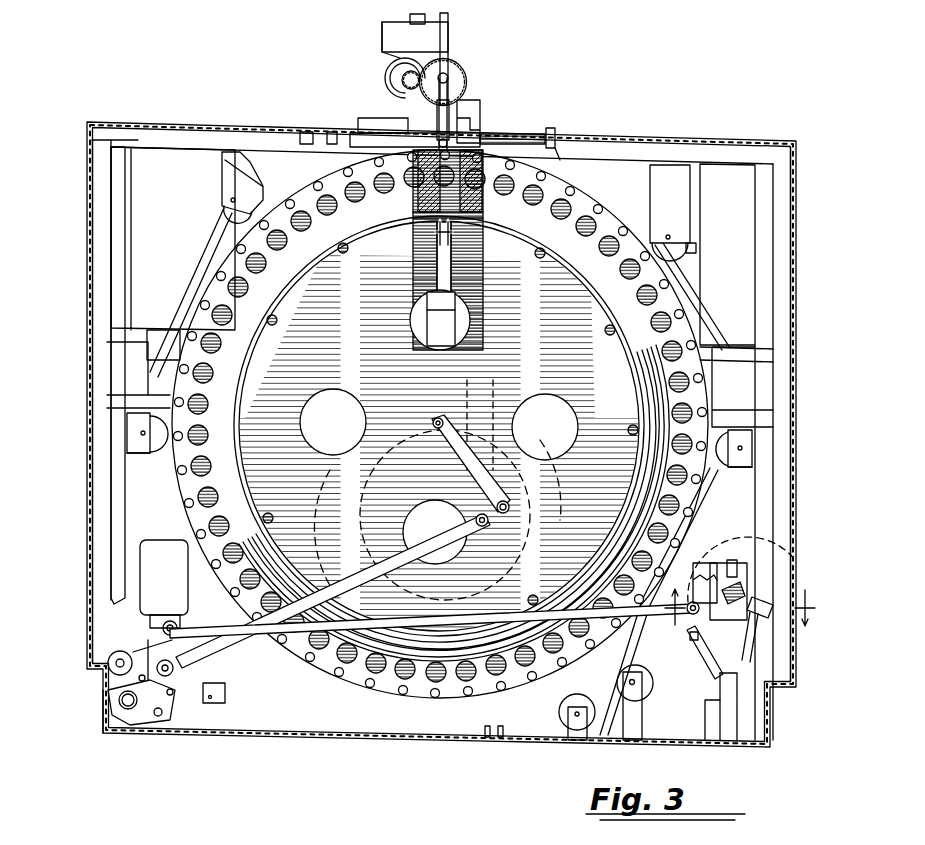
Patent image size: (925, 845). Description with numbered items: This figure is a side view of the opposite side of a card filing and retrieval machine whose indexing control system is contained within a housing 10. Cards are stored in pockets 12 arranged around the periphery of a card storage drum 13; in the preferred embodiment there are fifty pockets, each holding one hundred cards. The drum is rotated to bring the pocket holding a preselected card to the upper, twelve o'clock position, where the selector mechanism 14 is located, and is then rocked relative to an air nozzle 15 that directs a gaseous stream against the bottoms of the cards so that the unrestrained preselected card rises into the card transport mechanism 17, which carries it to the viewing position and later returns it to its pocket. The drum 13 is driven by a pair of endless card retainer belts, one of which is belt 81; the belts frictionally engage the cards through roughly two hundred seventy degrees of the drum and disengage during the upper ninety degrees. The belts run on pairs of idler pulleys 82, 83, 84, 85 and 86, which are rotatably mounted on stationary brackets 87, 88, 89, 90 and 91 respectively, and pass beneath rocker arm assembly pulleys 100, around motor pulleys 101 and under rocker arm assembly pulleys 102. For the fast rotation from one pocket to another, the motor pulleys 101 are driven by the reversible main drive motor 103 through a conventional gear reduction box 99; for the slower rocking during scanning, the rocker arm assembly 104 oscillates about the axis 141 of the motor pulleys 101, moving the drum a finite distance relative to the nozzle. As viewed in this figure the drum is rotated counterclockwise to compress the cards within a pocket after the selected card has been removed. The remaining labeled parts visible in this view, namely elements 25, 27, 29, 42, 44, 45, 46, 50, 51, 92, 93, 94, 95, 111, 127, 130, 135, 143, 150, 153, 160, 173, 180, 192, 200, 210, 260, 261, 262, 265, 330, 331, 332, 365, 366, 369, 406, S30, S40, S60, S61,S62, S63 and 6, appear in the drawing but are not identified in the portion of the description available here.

The housing 10 is at (781, 119).
The pockets 12 is at (480, 130).
The card storage drum 13 is at (588, 192).
The selector mechanism 14 is at (370, 120).
The air nozzle 15 is at (472, 261).
The card transport mechanism 17 is at (516, 60).
The disc body 25 is at (440, 443).
The disc rim 27 is at (280, 280).
The pins 29 is at (278, 321).
The side frame 42 is at (95, 243).
The side panel 44 is at (168, 148).
The panel edge 45 is at (165, 340).
The bearing block 46 is at (440, 384).
The hole 50 is at (226, 312).
The frame wall 51 is at (88, 432).
The card retainer belt 81 is at (200, 222).
The idler pulleys 82 is at (647, 688).
The idler pulleys 83 is at (724, 462).
The idler pulleys 84 is at (696, 250).
The idler pulleys 85 is at (220, 195).
The idler pulleys 86 is at (158, 455).
The stationary bracket 87 is at (642, 720).
The stationary bracket 88 is at (745, 452).
The stationary bracket 89 is at (692, 192).
The stationary bracket 90 is at (252, 186).
The stationary bracket 91 is at (138, 455).
The roller 92 is at (580, 696).
The post 93 is at (588, 722).
The pin 94 is at (489, 726).
The pin 95 is at (504, 726).
The gear reduction box 99 is at (157, 618).
The rocker arm assembly pulleys 100 is at (140, 650).
The motor pulleys 101 is at (195, 656).
The rocker arm assembly pulleys 102 is at (141, 704).
The main drive motor 103 is at (160, 552).
The rocker arm assembly 104 is at (101, 711).
The pin 111 is at (165, 712).
The pivot 127 is at (180, 628).
The wheel 130 is at (110, 672).
The lever 135 is at (103, 631).
The axis 141 is at (175, 670).
The switch 143 is at (228, 693).
The arc path 150 is at (788, 560).
The link 153 is at (434, 620).
The post 160 is at (718, 686).
The lever 173 is at (765, 629).
The post 180 is at (724, 740).
The bracket 192 is at (700, 565).
The pad 200 is at (703, 658).
The block 210 is at (728, 591).
The dashed path 260 is at (333, 486).
The dashed path 261 is at (428, 490).
The arm 262 is at (428, 428).
The block 265 is at (466, 326).
The hole 330 is at (452, 563).
The pivot 331 is at (468, 502).
The pivot 332 is at (420, 546).
The gear 365 is at (388, 78).
The gear 366 is at (458, 68).
The shaft 369 is at (452, 92).
The rail 406 is at (516, 132).
The switch S30 is at (686, 636).
The switch S40 is at (738, 558).
The switch S60 is at (566, 157).
The switches S61,S62 is at (338, 160).
The switch S63 is at (305, 130).
The section line 6 is at (735, 616).